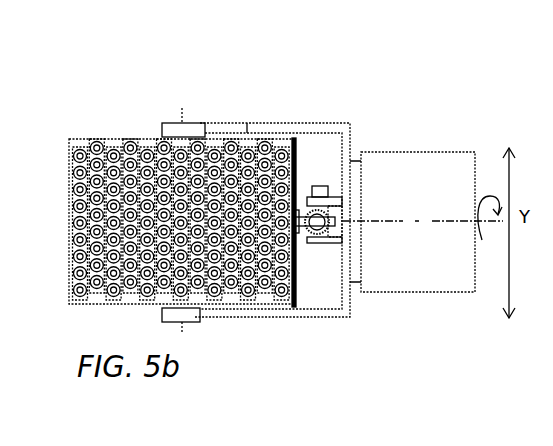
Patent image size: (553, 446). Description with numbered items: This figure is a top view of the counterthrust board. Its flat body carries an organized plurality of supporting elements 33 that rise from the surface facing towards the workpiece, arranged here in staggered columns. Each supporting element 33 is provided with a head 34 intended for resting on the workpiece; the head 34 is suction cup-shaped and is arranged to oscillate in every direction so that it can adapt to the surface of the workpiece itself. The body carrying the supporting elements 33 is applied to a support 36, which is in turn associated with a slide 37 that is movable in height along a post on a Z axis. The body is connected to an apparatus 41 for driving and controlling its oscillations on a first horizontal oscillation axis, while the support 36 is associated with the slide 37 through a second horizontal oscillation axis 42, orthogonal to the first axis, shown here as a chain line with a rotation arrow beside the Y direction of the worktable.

The supporting elements 33 is at (130, 130).
The head 34 is at (260, 138).
The support 36 is at (330, 124).
The slide 37 is at (420, 152).
The apparatus for driving and controlling oscillations 41 is at (315, 240).
The second horizontal oscillation axis 42 is at (387, 221).